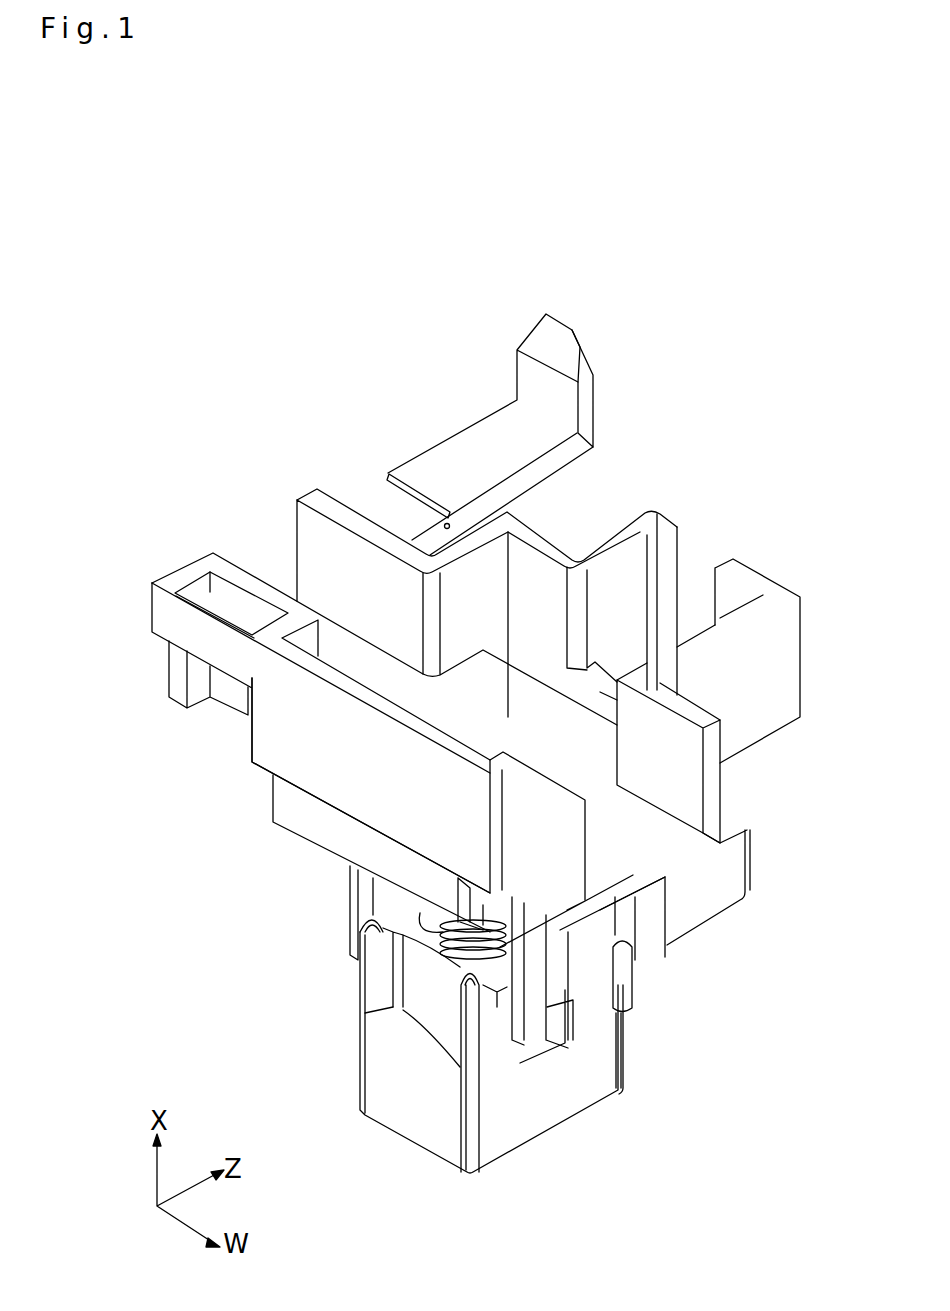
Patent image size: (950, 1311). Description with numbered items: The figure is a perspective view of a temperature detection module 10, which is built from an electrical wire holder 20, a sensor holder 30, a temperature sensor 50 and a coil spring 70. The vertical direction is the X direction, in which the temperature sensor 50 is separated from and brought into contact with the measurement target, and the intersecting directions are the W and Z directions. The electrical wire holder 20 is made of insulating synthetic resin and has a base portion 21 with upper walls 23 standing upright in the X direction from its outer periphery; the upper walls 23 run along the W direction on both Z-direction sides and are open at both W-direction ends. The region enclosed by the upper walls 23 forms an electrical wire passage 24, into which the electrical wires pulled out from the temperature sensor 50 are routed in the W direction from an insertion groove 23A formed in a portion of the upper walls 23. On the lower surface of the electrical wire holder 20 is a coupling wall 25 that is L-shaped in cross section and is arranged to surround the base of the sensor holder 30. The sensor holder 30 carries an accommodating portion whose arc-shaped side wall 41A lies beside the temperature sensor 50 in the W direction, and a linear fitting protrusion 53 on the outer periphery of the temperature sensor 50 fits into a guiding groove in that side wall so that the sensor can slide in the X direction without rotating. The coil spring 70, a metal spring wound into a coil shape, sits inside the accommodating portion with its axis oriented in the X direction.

The temperature detection module 10 is at (426, 341).
The electrical wire holder 20 is at (233, 711).
The base portion 21 is at (533, 718).
The upper walls 23 is at (672, 750).
The insertion groove 23A is at (672, 570).
The electrical wire passage 24 is at (345, 582).
The coupling wall 25 is at (298, 820).
The sensor holder 30 is at (675, 899).
The side wall 41A is at (590, 1008).
The temperature sensor 50 is at (418, 1120).
The fitting protrusion 53 is at (626, 986).
The coil spring 70 is at (452, 938).